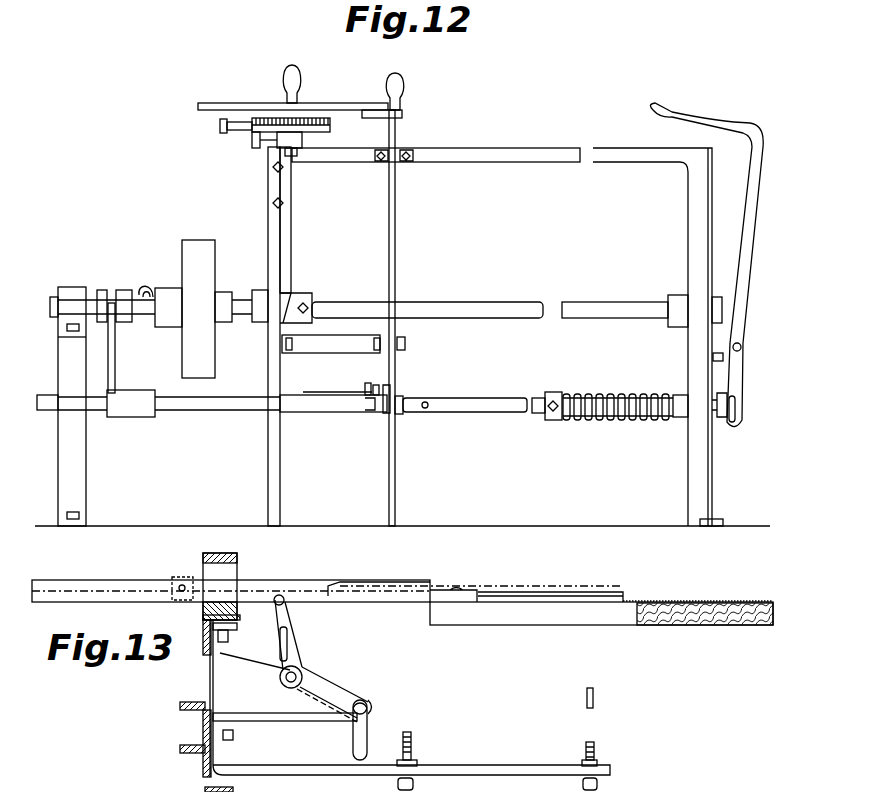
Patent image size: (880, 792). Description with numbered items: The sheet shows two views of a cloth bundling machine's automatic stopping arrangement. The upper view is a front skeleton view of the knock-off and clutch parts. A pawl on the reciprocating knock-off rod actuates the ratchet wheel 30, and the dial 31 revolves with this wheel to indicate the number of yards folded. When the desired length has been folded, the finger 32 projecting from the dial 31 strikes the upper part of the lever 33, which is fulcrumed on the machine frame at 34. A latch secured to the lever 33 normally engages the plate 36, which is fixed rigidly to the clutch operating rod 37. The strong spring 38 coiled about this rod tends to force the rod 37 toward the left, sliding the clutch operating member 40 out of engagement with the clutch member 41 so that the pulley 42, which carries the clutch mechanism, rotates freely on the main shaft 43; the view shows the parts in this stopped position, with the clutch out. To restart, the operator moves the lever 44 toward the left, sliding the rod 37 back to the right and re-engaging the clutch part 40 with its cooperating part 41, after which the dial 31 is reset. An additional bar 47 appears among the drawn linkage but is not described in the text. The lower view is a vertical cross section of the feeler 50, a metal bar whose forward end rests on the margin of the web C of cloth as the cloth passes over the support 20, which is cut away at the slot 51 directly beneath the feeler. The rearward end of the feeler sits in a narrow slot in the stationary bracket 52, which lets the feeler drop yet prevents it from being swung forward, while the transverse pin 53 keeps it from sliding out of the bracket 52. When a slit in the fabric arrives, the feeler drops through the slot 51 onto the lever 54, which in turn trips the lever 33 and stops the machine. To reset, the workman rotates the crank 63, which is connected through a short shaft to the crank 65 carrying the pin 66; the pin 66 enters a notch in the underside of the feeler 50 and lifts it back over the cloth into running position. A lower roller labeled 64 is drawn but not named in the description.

In FIG. 12, the ratchet wheel 30 is at (280, 122).
In FIG. 12, the dial 31 is at (350, 95).
In FIG. 12, the finger 32 is at (398, 123).
In FIG. 12, the lever 33 is at (398, 235).
In FIG. 12, the fulcrum 34 is at (415, 346).
In FIG. 12, the plate 36 is at (413, 403).
In FIG. 12, the clutch operating rod 37 is at (472, 402).
In FIG. 12, the spring 38 is at (609, 427).
In FIG. 12, the clutch operating member 40 is at (120, 287).
In FIG. 12, the clutch member 41 is at (147, 282).
In FIG. 12, the pulley 42 is at (210, 233).
In FIG. 12, the main shaft 43 is at (500, 296).
In FIG. 12, the lever 44 is at (723, 125).
In FIG. 12, the bar 47 is at (372, 408).
In FIG. 13, the support 20 is at (720, 626).
In FIG. 13, the feeler 50 is at (390, 580).
In FIG. 13, the slot 51 is at (610, 620).
In FIG. 13, the bracket 52 is at (218, 554).
In FIG. 13, the pin 53 is at (40, 586).
In FIG. 13, the lever 54 is at (595, 697).
In FIG. 13, the crank 63 is at (358, 733).
In FIG. 13, the lever 64 is at (368, 703).
In FIG. 13, the crank 65 is at (300, 648).
In FIG. 13, the pin 66 is at (300, 585).
In FIG. 13, the web C is at (755, 601).